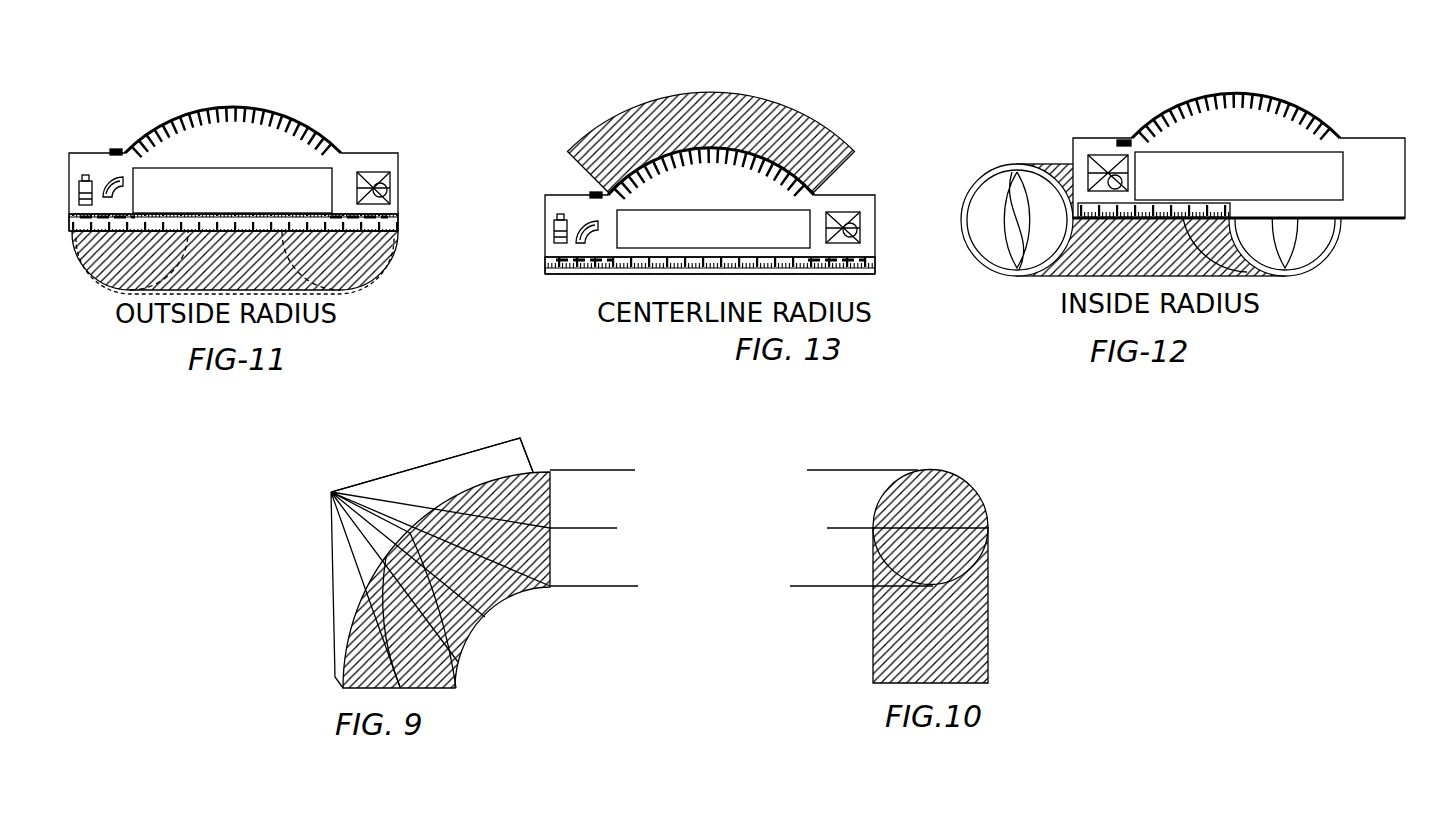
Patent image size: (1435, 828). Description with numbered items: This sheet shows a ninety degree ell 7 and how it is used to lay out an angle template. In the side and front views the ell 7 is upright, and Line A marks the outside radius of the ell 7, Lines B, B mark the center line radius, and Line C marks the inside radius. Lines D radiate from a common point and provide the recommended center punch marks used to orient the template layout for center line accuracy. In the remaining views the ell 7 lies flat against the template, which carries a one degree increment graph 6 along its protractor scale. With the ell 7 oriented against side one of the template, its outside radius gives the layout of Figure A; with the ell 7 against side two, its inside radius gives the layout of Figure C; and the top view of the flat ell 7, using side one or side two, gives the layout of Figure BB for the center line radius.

In FIG. 11, the one degree increment graph 6 is at (271, 201).
In FIG. 13, the one degree increment graph 6 is at (661, 202).
In FIG. 12, the one degree increment graph 6 is at (1239, 196).
In FIG. 11, the ninety degree ell 7 is at (337, 290).
In FIG. 13, the ninety degree ell 7 is at (648, 98).
In FIG. 12, the ninety degree ell 7 is at (745, 395).
In FIG. 9, the ninety degree ell 7 is at (468, 645).
In FIG. 10, the ninety degree ell 7 is at (872, 615).
In FIG. 11, the Line A is at (232, 190).
In FIG. 9, the Line A is at (678, 465).
In FIG. 10, the Line A is at (871, 461).
In FIG. 9, the Lines B— B is at (688, 522).
In FIG. 10, the Lines B— B is at (913, 520).
In FIG. 13, the Figure BB is at (713, 229).
In FIG. 12, the Line C is at (1239, 176).
In FIG. 9, the Line C is at (670, 581).
In FIG. 10, the Line C is at (863, 593).
In FIG. 9, the Lines D is at (427, 469).